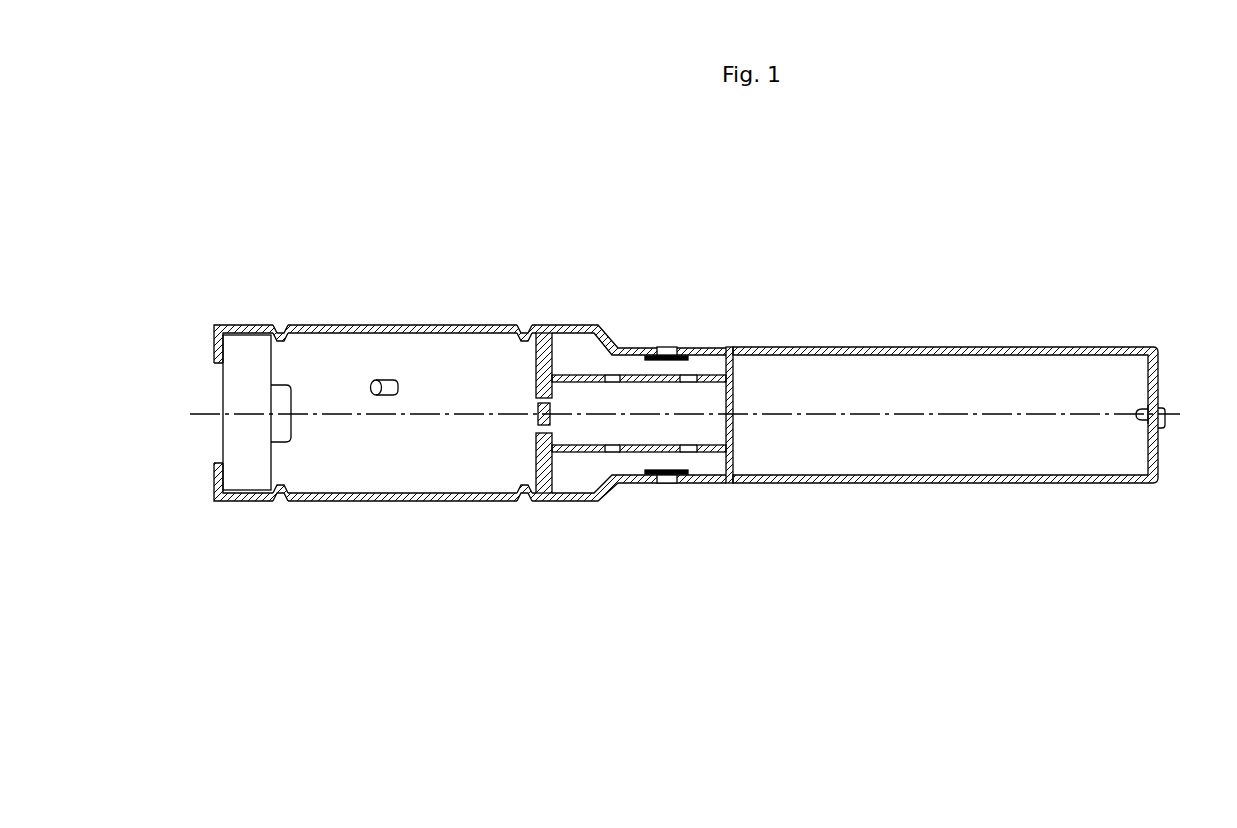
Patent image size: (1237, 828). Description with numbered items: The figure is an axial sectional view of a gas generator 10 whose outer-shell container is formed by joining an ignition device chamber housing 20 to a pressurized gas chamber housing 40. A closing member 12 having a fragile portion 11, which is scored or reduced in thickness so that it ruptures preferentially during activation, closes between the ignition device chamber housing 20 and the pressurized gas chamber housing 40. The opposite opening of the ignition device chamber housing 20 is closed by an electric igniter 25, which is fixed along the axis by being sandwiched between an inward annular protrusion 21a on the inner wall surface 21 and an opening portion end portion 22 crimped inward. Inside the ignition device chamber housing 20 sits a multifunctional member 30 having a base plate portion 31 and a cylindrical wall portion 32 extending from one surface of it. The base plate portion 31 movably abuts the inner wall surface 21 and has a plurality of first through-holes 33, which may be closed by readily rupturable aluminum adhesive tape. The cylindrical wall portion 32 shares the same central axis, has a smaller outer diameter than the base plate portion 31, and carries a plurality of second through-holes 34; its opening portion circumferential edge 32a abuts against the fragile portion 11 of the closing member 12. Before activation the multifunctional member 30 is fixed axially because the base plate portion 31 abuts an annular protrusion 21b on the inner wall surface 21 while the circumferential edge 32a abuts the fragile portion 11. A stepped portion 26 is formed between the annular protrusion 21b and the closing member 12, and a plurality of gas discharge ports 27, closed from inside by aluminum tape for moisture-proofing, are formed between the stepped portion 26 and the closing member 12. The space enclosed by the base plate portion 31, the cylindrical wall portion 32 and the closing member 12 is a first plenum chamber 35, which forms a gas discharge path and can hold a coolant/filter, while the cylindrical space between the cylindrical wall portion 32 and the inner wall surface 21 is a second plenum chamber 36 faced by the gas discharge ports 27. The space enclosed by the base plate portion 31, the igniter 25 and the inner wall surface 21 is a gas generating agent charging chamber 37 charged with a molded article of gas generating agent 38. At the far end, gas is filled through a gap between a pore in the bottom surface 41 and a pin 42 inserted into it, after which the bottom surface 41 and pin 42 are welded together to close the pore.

The gas generator 10 is at (822, 320).
The fragile portion 11 is at (717, 446).
The closing member 12 is at (733, 428).
The ignition device chamber housing 20 is at (439, 386).
The inner wall surface 21 is at (456, 333).
The inward annular protrusion 21a is at (279, 341).
The annular protrusion (first protrusion) 21b is at (525, 343).
The opening portion end portion 22 is at (214, 345).
The electric igniter 25 is at (230, 392).
The stepped portion (second protrusion) 26 is at (590, 334).
The gas discharge ports 27 is at (667, 347).
The multifunctional member 30 is at (642, 417).
The base plate portion 31 is at (545, 496).
The cylindrical wall portion 32 is at (679, 461).
The opening portion circumferential edge 32a is at (733, 378).
The first through-holes 33 is at (536, 428).
The second through-holes 34 is at (702, 454).
The first plenum chamber 35 is at (622, 427).
The second plenum chamber 36 is at (579, 484).
The gas generating agent charging chamber 37 is at (357, 466).
The molded article of gas generating agent 38 is at (392, 381).
The pressurized gas chamber housing 40 is at (979, 388).
The bottom surface 41 is at (1160, 376).
The pin 42 is at (1162, 428).